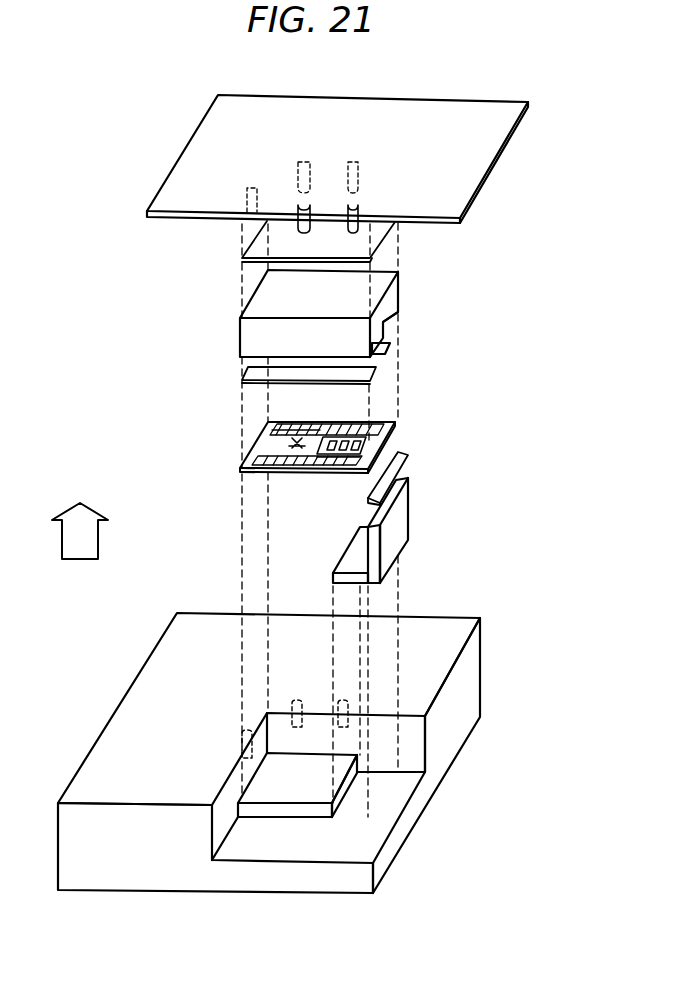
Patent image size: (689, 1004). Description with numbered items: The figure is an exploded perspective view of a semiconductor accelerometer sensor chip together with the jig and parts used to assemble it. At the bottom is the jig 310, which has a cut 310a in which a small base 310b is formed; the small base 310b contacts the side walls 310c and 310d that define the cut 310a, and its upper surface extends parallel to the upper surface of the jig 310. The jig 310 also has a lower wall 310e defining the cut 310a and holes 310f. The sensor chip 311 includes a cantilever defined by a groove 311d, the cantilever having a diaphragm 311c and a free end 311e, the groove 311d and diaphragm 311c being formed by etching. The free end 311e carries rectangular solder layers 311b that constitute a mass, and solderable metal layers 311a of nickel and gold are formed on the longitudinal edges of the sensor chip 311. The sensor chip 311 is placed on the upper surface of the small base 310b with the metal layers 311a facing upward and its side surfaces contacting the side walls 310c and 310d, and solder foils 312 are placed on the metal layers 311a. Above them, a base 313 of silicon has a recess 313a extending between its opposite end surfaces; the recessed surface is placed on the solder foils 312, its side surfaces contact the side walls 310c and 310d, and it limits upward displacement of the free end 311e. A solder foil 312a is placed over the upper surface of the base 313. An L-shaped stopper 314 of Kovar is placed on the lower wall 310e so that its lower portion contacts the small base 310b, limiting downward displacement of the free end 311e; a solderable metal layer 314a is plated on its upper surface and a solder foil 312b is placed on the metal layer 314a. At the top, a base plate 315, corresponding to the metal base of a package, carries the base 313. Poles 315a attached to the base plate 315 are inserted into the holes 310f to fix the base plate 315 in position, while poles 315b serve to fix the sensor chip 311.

The jig 310 is at (305, 774).
The cut 310a is at (380, 863).
The small base 310b is at (303, 808).
The side wall 310c is at (232, 823).
The side wall 310d is at (408, 725).
The lower wall 310e is at (347, 853).
The holes 310f is at (297, 700).
The sensor chip 311 is at (347, 446).
The solderable metal layers 311a is at (377, 423).
The solder layers 311b is at (360, 442).
The diaphragm 311c is at (297, 444).
The groove 311d is at (313, 432).
The free end 311e is at (353, 453).
The solder foils 312 is at (363, 377).
The solder foil 312a is at (380, 230).
The solder foil 312b is at (392, 483).
The base 313 is at (258, 335).
The recess 313a is at (387, 325).
The L-shaped stopper 314 is at (419, 530).
The solderable metal layer 314a is at (400, 508).
The base plate 315 is at (460, 178).
The poles 315a is at (252, 188).
The poles 315b is at (347, 232).